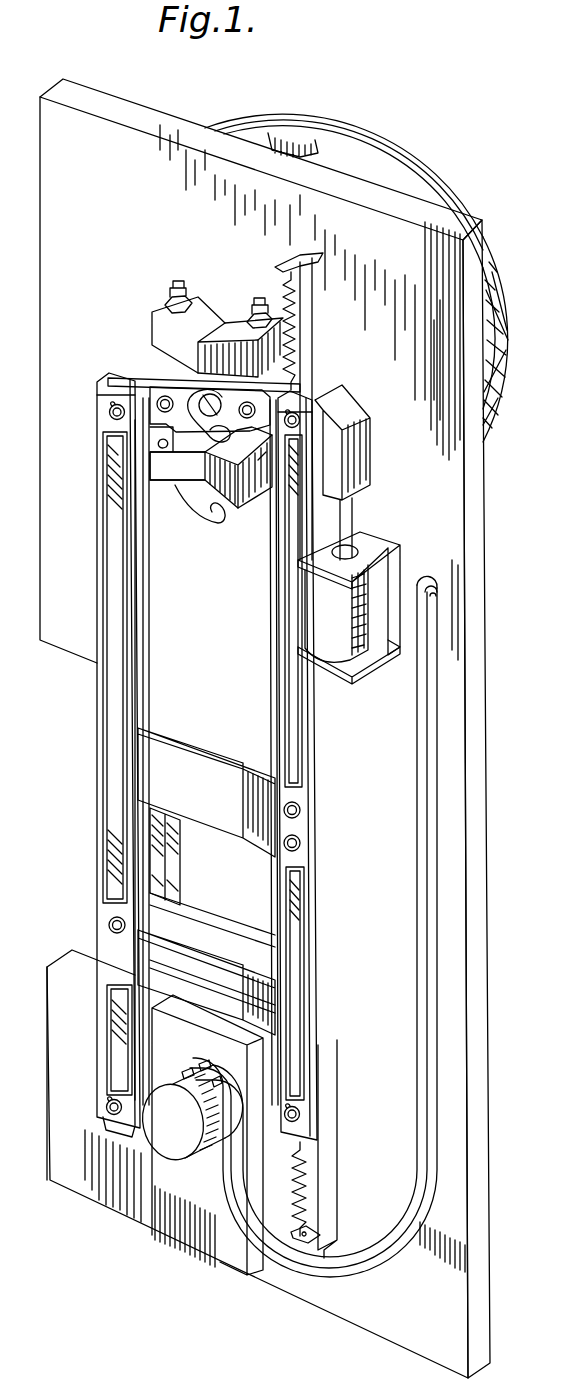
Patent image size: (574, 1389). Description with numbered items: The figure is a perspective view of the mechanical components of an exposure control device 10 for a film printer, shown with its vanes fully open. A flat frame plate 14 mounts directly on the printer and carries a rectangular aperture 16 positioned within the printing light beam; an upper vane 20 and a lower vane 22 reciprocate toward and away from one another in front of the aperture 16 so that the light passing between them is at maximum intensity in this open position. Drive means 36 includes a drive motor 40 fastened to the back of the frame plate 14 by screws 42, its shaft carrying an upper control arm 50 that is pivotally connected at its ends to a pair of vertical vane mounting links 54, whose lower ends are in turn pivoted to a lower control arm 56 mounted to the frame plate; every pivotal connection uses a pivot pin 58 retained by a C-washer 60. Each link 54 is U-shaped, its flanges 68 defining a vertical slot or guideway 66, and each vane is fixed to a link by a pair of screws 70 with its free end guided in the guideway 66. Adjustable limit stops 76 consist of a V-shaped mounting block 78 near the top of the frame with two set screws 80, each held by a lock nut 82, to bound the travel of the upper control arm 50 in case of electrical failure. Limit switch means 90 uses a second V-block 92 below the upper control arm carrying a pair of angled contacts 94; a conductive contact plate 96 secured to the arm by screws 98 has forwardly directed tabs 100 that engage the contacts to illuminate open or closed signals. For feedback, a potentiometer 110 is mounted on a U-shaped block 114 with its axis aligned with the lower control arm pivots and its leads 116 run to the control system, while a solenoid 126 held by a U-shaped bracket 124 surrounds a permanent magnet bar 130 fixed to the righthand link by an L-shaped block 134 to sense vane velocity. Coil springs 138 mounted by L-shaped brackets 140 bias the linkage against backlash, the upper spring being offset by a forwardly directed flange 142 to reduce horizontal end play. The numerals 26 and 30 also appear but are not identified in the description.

The exposure control device 10 is at (296, 58).
The frame plate 14 is at (437, 240).
The rectangular aperture 16 is at (178, 878).
The upper vane 20 is at (190, 795).
The lower vane 22 is at (200, 1037).
The carriage plate edge 26 is at (212, 995).
The carriage post 30 is at (205, 830).
The drive means 36 is at (181, 434).
The drive motor 40 is at (384, 162).
The screws 42 is at (300, 135).
The upper control arm 50 is at (135, 378).
The vane mounting links 54 is at (97, 528).
The lower control arm 56 is at (115, 1128).
The pivot pin 58 is at (108, 416).
The C-washers 60 is at (108, 408).
The slot or guideway 66 is at (300, 398).
The flanges 68 is at (145, 662).
The screws 70 is at (108, 927).
The adjustable limit stops 76 is at (218, 298).
The V-shaped mounting block 78 is at (200, 322).
The set screws 80 is at (180, 286).
The lock nut 82 is at (248, 300).
The limit switch means 90 is at (178, 503).
The V-block 92 is at (238, 510).
The contacts 94 is at (166, 450).
The conductive contact plate 96 is at (227, 409).
The screws 98 is at (165, 397).
The tabs 100 is at (170, 442).
The potentiometer 110 is at (182, 1171).
The U-shaped block 114 is at (205, 1200).
The potentiometer leads 116 is at (437, 932).
The U-shaped bracket 124 is at (402, 565).
The solenoid 126 is at (336, 613).
The permanent magnet bar 130 is at (353, 520).
The L-shaped block 134 is at (375, 462).
The coil springs 138 is at (292, 355).
The L-shaped bracket 140 is at (318, 312).
The forwardly directed flange 142 is at (320, 256).